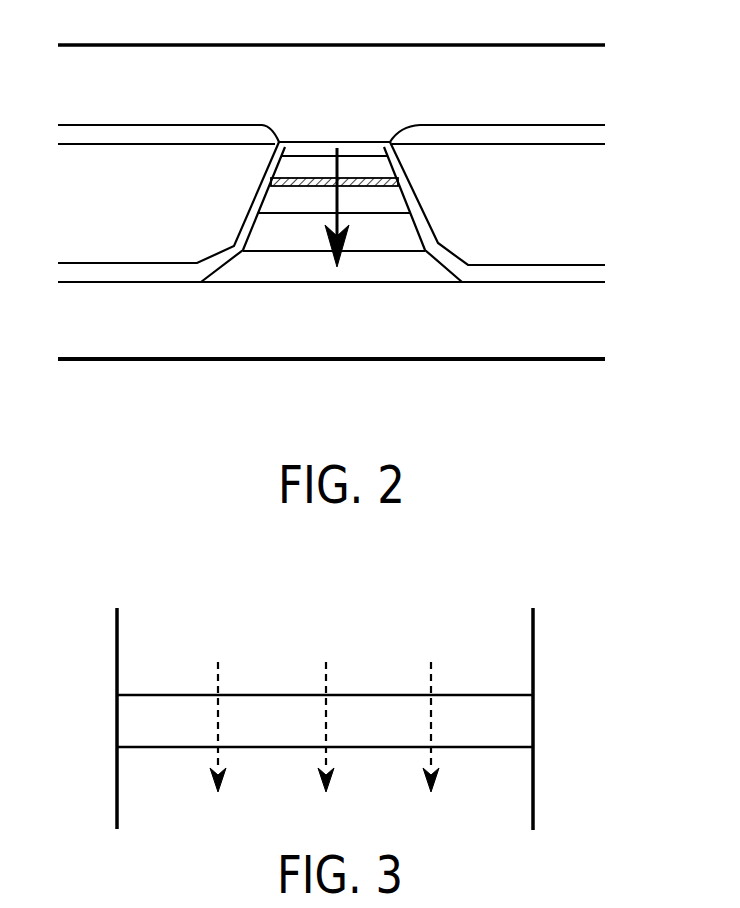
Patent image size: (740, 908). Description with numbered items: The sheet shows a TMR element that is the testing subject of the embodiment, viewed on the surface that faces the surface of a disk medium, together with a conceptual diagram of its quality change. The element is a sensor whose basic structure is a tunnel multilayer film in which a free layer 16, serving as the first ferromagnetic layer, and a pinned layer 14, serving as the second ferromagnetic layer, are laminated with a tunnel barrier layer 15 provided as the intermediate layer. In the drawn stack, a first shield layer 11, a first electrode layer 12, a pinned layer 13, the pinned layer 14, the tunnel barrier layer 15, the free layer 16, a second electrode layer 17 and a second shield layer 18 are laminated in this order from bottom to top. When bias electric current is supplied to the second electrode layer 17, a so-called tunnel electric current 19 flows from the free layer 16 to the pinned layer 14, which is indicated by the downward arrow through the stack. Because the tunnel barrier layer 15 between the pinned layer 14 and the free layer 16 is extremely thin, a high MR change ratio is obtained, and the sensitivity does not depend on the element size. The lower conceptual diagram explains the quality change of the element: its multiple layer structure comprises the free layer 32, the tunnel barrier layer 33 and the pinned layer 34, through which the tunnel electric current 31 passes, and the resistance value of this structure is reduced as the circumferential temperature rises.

In FIG. 2, the first shield layer 11 is at (572, 321).
In FIG. 2, the first electrode layer 12 is at (380, 266).
In FIG. 2, the pinned layer 13 is at (267, 230).
In FIG. 2, the pinned layer (second ferromagnetic layer) 14 is at (390, 200).
In FIG. 2, the tunnel barrier layer 15 is at (293, 177).
In FIG. 2, the free layer (first ferromagnetic layer) 16 is at (366, 160).
In FIG. 2, the second electrode layer 17 is at (307, 150).
In FIG. 2, the second shield layer 18 is at (573, 89).
In FIG. 2, the tunnel electric current 19 is at (334, 196).
In FIG. 3, the tunnel electric current 31 is at (216, 678).
In FIG. 3, the free layer 32 is at (508, 657).
In FIG. 3, the tunnel barrier layer 33 is at (508, 722).
In FIG. 3, the pinned layer 34 is at (508, 790).